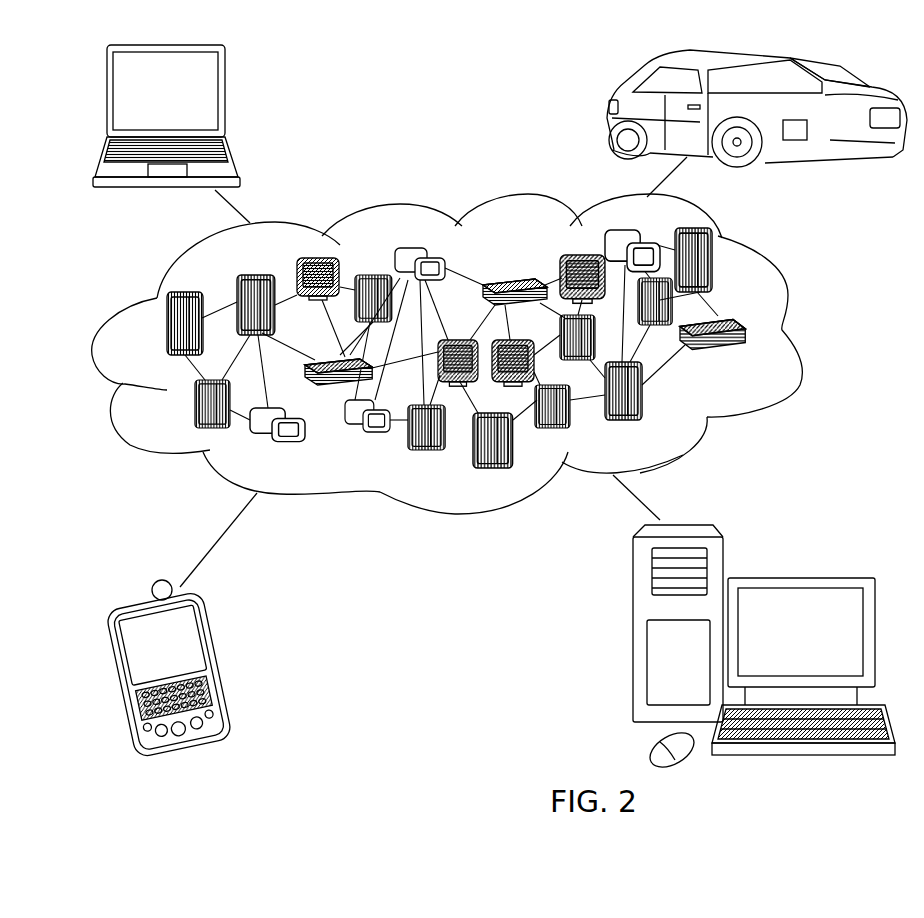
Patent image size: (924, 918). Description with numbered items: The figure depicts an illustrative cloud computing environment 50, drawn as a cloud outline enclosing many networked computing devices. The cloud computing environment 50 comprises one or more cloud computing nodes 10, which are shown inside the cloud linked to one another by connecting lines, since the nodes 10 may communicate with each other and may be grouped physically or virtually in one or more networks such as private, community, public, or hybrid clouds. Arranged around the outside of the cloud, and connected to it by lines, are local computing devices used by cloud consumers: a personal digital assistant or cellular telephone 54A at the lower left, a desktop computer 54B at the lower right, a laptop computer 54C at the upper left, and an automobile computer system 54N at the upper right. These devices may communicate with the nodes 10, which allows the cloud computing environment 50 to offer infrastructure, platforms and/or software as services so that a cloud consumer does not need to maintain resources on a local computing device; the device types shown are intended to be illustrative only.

The cloud computing node 10 is at (757, 361).
The cloud computing environment 50 is at (470, 354).
The personal digital assistant or cellular telephone 54A is at (217, 657).
The desktop computer 54B is at (797, 575).
The laptop computer 54C is at (225, 98).
The automobile computer system 54N is at (608, 110).